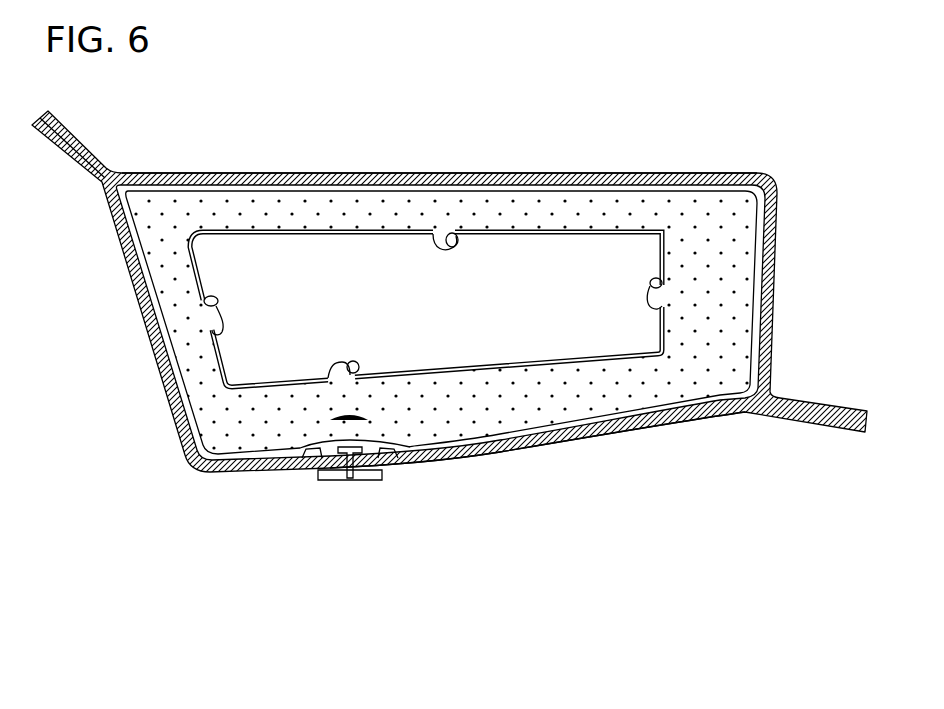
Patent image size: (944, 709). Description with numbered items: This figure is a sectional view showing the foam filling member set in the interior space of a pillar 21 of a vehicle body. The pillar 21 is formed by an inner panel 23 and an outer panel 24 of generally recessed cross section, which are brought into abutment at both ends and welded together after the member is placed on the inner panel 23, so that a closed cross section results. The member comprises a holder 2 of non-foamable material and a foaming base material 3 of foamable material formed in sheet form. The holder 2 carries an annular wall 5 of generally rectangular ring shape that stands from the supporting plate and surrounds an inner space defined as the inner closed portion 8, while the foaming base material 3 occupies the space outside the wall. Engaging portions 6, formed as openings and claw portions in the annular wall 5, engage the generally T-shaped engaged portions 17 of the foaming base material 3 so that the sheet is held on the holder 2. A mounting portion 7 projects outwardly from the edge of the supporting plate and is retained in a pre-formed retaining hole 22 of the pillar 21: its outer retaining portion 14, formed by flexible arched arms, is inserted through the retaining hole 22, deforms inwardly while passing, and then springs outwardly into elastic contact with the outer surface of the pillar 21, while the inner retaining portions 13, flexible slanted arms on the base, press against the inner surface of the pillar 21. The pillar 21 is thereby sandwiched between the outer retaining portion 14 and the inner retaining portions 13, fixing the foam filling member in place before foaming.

The holder 2 is at (770, 292).
The foaming base material 3 is at (656, 388).
The annular wall 5 is at (335, 236).
The engaging portions 6 is at (440, 250).
The mounting portion 7 is at (338, 495).
The inner closed portion 8 is at (548, 248).
The inner retaining portions 13 is at (305, 462).
The outer retaining portion 14 is at (370, 482).
The engaged portions 17 is at (458, 247).
The pillar 21 is at (517, 470).
The retaining hole 22 is at (345, 482).
The inner panel 23 is at (595, 445).
The outer panel 24 is at (571, 172).